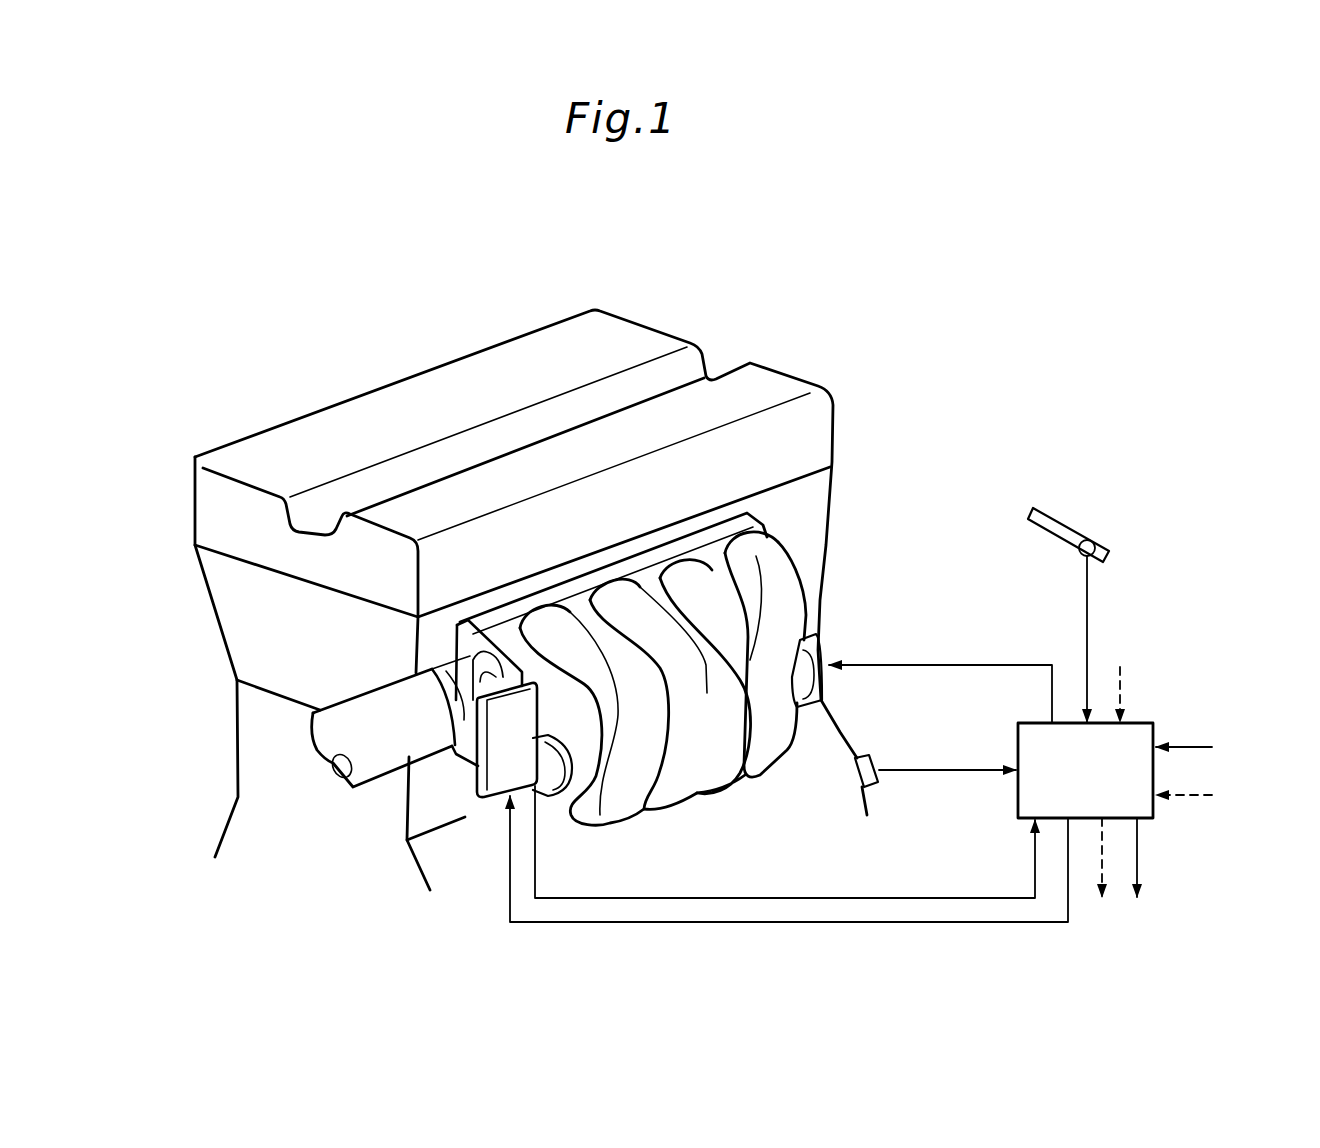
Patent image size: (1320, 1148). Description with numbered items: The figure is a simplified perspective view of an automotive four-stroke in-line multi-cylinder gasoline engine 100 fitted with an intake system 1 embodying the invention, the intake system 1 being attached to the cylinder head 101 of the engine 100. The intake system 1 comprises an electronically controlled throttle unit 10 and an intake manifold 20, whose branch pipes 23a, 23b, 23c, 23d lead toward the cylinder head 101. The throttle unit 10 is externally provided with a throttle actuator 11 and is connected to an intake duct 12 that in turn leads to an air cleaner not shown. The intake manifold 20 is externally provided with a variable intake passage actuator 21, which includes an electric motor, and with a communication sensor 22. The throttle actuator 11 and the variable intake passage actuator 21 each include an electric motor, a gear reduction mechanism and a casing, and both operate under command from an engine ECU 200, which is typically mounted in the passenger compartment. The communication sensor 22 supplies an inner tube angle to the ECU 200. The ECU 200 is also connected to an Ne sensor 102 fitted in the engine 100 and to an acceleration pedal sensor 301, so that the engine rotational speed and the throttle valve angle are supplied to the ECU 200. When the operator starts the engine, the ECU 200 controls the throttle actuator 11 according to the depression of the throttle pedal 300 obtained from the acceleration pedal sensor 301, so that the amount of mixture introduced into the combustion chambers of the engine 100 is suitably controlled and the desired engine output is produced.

The engine 100 is at (854, 291).
The intake system 1 is at (836, 575).
The cylinder head 101 is at (223, 610).
The throttle unit 10 is at (462, 677).
The throttle actuator 11 is at (495, 782).
The intake duct 12 is at (372, 753).
The intake manifold 20 is at (763, 520).
The variable intake passage actuator 21 is at (820, 647).
The communication sensor 22 is at (550, 773).
The intake branch pipe 23a is at (750, 548).
The intake branch pipe 23b is at (680, 572).
The intake branch pipe 23c is at (617, 600).
The intake branch pipe 23d is at (548, 618).
The Ne sensor 102 is at (873, 760).
The engine ECU 200 is at (1146, 719).
The throttle pedal 300 is at (1073, 527).
The acceleration pedal sensor 301 is at (1077, 558).